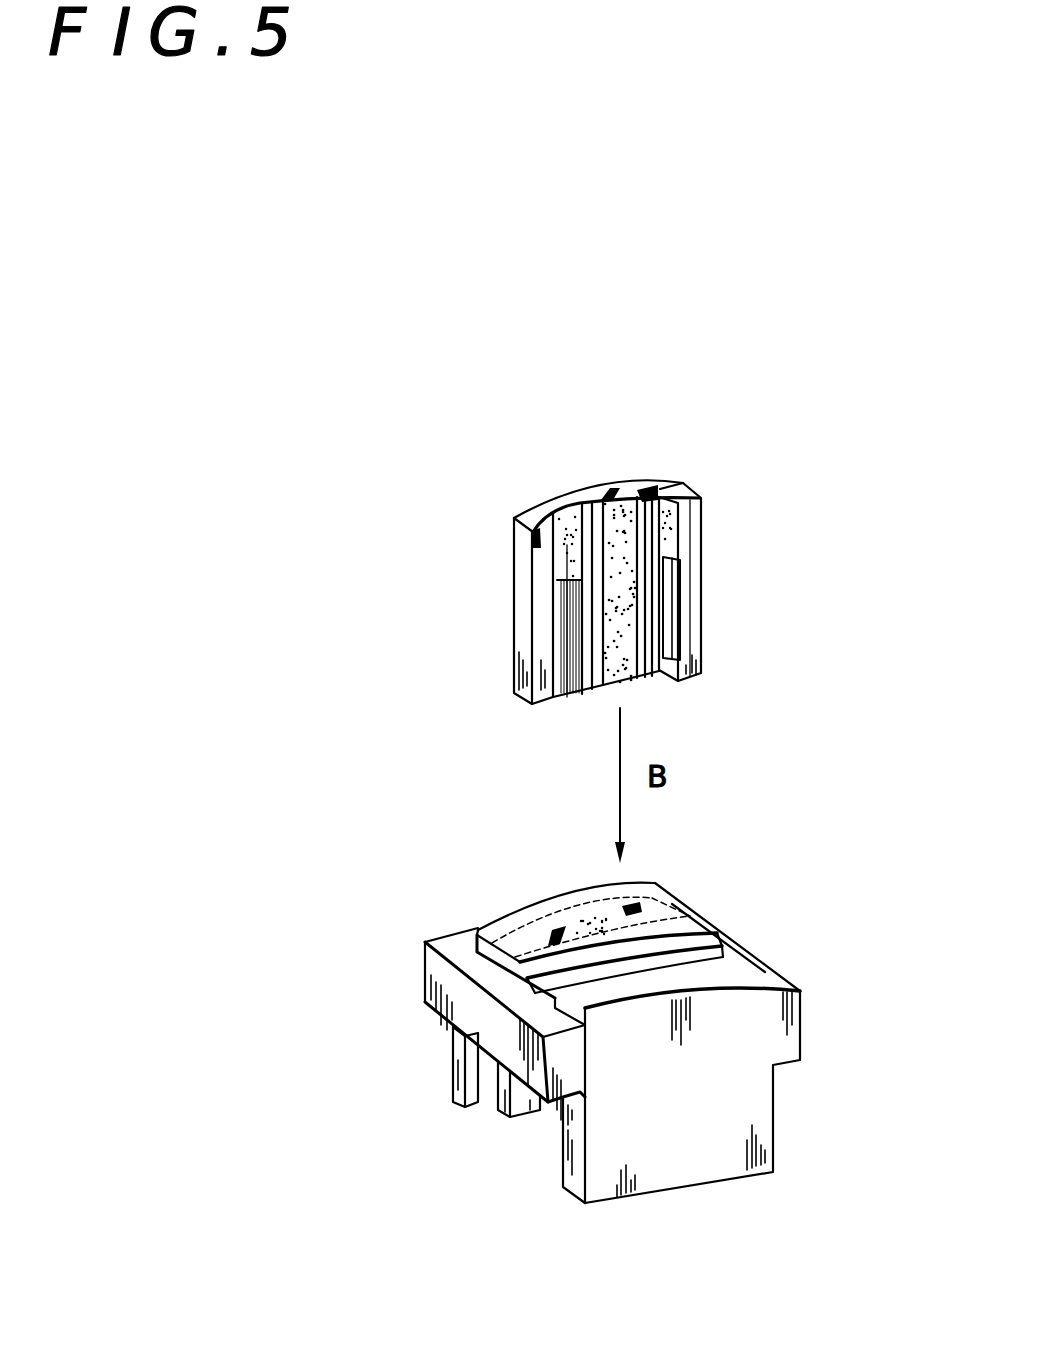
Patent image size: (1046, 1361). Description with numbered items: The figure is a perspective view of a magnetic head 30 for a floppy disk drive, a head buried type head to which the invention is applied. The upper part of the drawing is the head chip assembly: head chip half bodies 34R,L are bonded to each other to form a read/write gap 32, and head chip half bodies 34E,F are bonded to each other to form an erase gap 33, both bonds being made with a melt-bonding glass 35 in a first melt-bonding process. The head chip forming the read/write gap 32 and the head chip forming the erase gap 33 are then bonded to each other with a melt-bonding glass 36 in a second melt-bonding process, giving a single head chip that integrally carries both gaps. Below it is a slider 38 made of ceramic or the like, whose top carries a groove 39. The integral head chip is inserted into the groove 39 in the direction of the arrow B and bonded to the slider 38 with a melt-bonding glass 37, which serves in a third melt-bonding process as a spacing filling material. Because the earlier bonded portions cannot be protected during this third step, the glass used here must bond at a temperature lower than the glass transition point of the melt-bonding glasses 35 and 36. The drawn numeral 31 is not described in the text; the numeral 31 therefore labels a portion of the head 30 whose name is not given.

The magnetic head 30 is at (856, 824).
The head mounting block 31 is at (668, 893).
The read/write gap 32 is at (557, 506).
The erase gap 33 is at (660, 483).
The head chip half bodies 34R,L is at (577, 698).
The head chip half bodies 34E,F is at (653, 627).
The melt-bonding glass 35 is at (570, 545).
The melt-bonding glass 36 is at (613, 492).
The melt-bonding glass 37 is at (514, 935).
The slider 38 is at (703, 1163).
The groove 39 is at (720, 933).